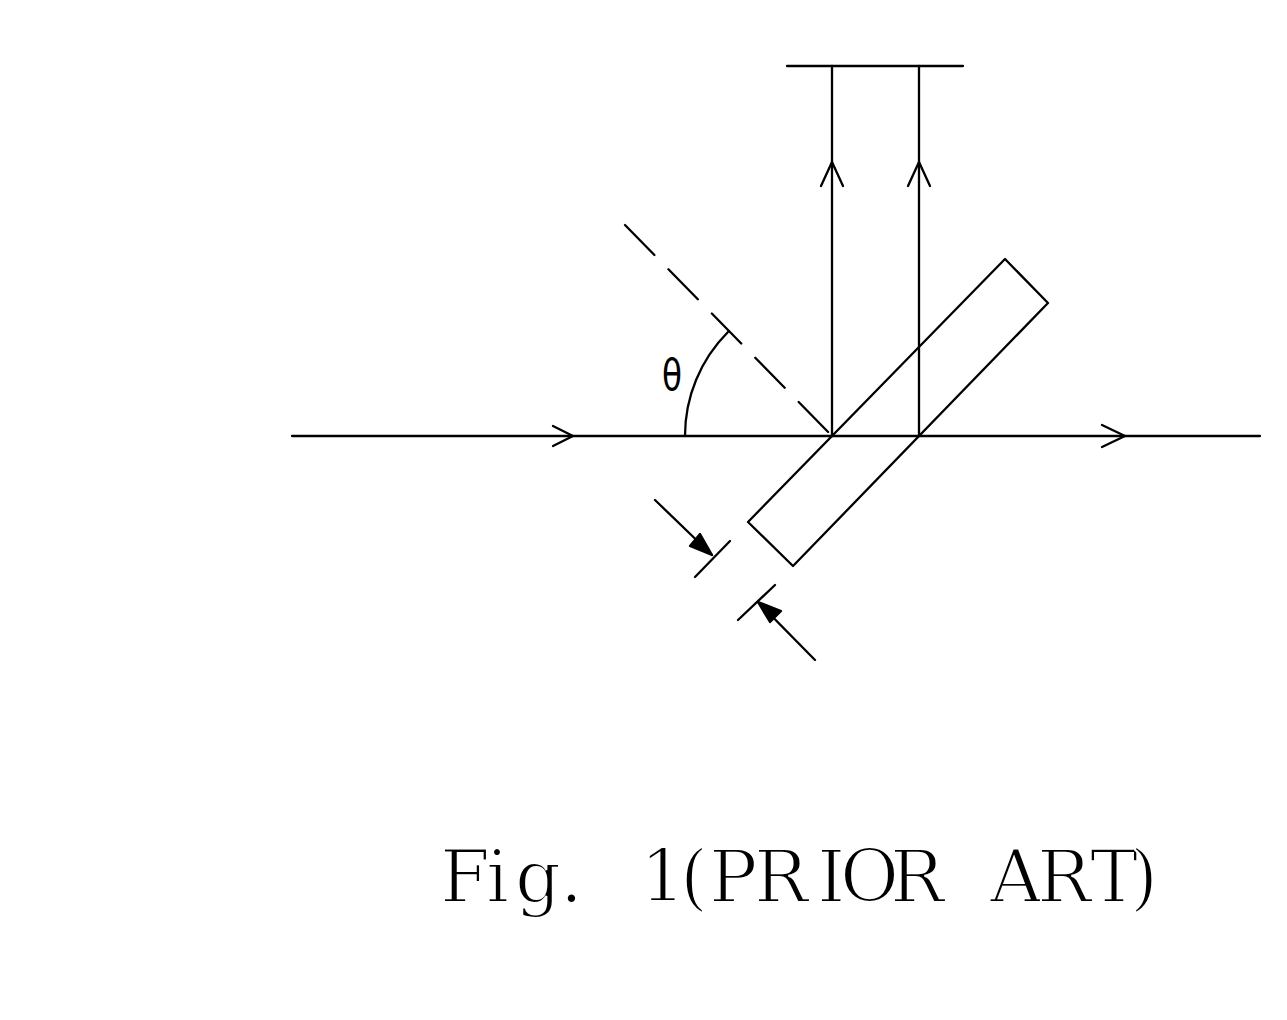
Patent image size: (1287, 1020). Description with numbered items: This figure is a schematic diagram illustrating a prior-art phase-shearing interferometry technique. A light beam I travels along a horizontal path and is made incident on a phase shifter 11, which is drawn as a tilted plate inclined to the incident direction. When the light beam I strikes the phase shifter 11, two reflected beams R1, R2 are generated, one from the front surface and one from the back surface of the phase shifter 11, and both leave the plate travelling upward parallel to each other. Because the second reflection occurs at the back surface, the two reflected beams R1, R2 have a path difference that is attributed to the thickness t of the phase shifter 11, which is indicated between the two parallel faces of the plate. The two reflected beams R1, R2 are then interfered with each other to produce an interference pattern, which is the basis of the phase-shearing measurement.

The phase shifter 11 is at (853, 476).
The light beam I is at (429, 434).
The reflected beam R1 is at (807, 251).
The reflected beam R2 is at (946, 251).
The thickness t is at (735, 580).